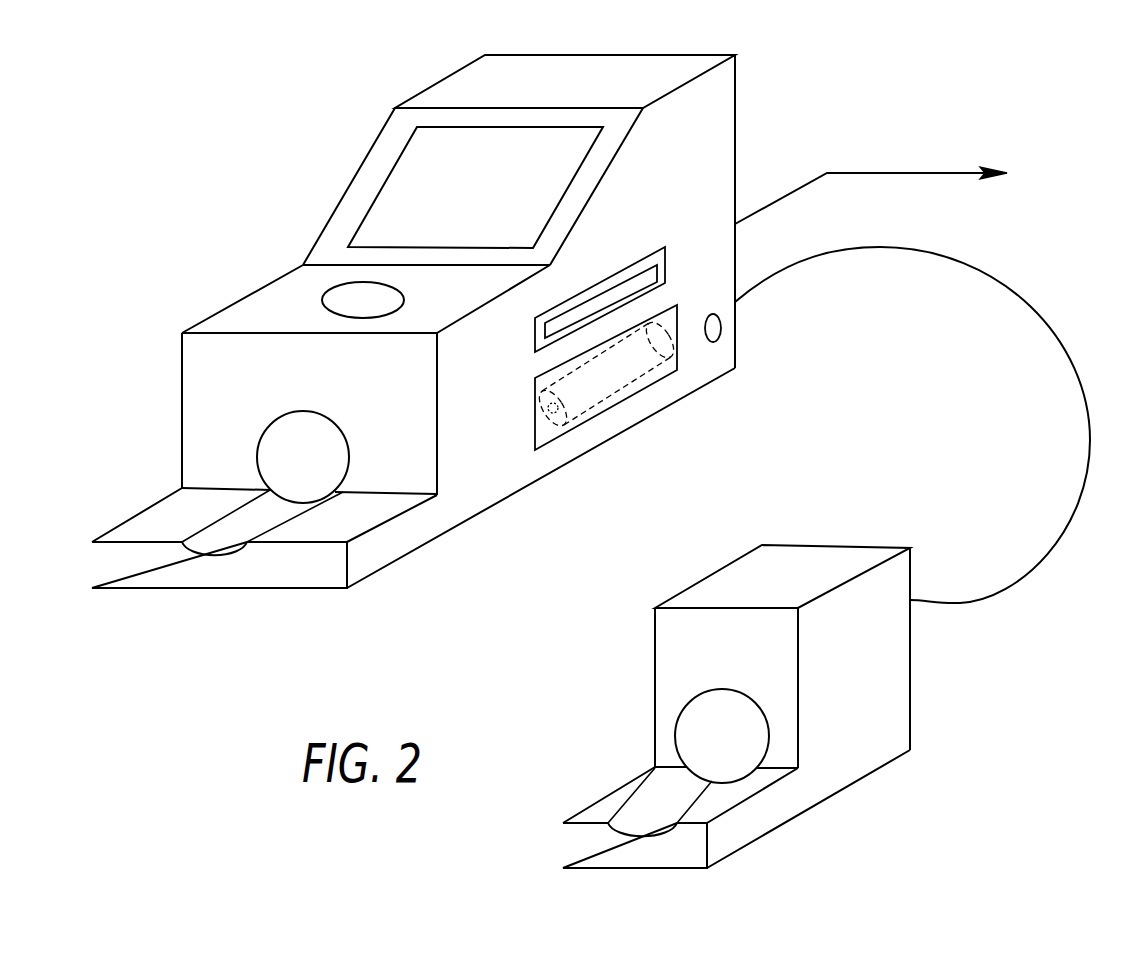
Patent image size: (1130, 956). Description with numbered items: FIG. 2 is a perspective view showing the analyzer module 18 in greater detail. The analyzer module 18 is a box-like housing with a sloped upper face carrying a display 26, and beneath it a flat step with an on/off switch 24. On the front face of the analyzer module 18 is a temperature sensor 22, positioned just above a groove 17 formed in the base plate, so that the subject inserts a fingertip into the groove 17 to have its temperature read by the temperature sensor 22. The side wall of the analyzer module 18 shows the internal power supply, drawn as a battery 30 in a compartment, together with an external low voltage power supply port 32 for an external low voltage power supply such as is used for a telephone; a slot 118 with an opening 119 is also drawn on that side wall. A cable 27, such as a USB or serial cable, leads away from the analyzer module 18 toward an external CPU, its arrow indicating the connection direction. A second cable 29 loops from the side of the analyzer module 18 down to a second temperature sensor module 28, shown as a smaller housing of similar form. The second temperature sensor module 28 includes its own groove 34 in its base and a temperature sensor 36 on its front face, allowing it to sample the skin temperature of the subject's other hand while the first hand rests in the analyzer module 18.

The groove 17 is at (218, 545).
The analyzer module 18 is at (482, 518).
The temperature sensor 22 is at (317, 428).
The on/off switch 24 is at (323, 300).
The display 26 is at (397, 192).
The cable 27 is at (902, 172).
The second temperature sensor module 28 is at (856, 795).
The cable 29 is at (1022, 302).
The battery 30 is at (642, 381).
The external low voltage power supply port 32 is at (722, 327).
The groove 34 is at (657, 803).
The temperature sensor 36 is at (750, 723).
The slot 118 is at (633, 267).
The slot opening 119 is at (652, 273).